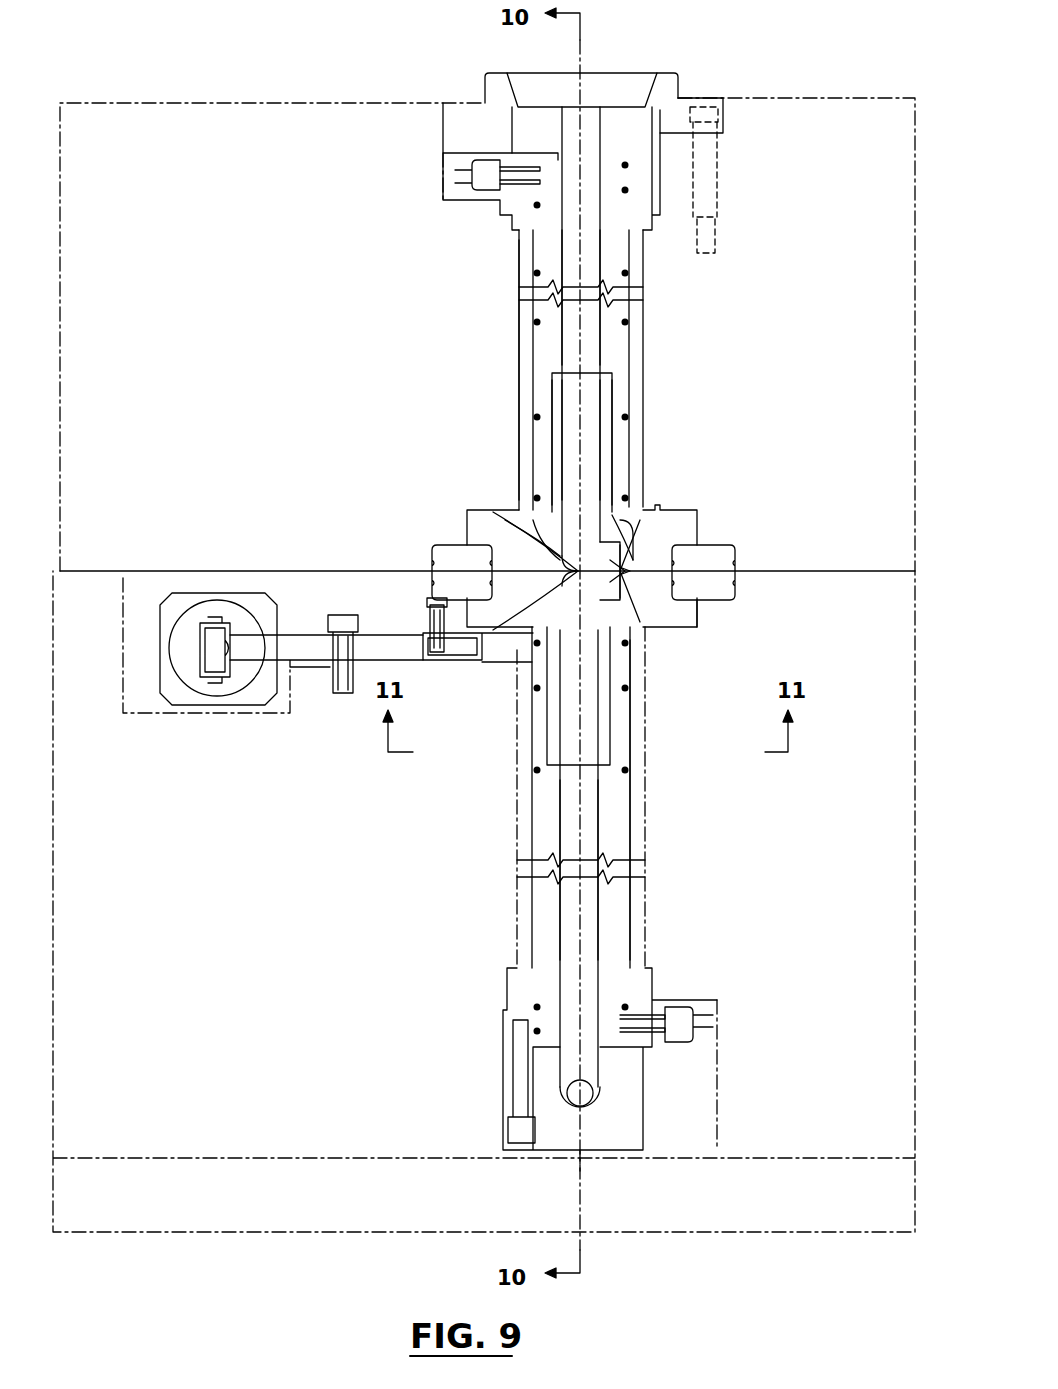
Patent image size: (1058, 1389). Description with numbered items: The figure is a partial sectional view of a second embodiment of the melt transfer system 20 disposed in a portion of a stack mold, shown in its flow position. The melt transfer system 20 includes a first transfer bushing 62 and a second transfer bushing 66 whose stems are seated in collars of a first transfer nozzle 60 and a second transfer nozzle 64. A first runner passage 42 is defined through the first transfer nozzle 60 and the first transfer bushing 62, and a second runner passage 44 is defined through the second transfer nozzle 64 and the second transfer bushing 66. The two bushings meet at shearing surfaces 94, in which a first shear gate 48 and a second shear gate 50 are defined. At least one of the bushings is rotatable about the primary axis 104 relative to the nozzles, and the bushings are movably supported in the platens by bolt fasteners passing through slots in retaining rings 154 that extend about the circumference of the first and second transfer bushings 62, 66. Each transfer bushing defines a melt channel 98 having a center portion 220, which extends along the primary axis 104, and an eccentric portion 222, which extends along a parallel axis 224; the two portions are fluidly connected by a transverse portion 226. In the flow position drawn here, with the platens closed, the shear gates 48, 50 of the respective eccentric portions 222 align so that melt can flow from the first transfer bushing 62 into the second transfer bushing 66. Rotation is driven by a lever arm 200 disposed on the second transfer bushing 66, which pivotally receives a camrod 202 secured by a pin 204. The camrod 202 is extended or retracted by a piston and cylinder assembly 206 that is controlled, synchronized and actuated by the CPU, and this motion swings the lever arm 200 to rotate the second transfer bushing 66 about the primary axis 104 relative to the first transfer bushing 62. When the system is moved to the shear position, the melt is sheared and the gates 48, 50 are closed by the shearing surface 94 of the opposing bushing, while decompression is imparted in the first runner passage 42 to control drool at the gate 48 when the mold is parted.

The melt transfer system 20 is at (760, 374).
The first runner passage 42 is at (567, 365).
The second runner passage 44 is at (578, 828).
The first shear gate 48 is at (613, 567).
The second shear gate 50 is at (636, 588).
The first transfer nozzle 60 is at (612, 255).
The first transfer bushing 62 is at (527, 522).
The second transfer nozzle 64 is at (612, 815).
The second transfer bushing 66 is at (678, 605).
The shearing surface 94 is at (548, 565).
The melt channel 98 is at (590, 408).
The primary axis 104 is at (580, 1172).
The retaining ring 154 is at (463, 557).
The lever arm 200 is at (423, 614).
The camrod 202 is at (343, 628).
The pin 204 is at (437, 603).
The piston and cylinder assembly 206 is at (208, 710).
The center portion 220 is at (572, 415).
The eccentric portion 222 is at (625, 557).
The parallel axis 224 is at (540, 530).
The transverse portion 226 is at (633, 507).